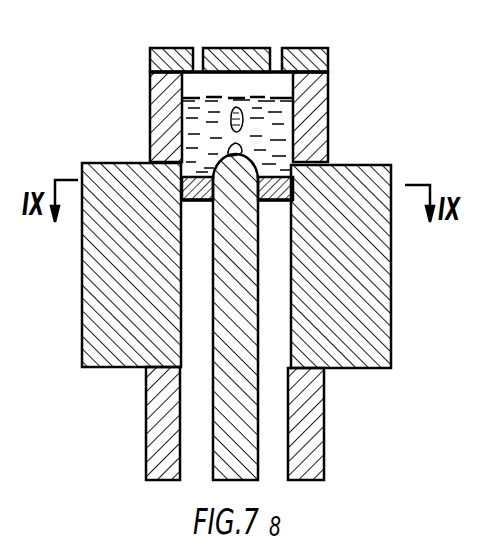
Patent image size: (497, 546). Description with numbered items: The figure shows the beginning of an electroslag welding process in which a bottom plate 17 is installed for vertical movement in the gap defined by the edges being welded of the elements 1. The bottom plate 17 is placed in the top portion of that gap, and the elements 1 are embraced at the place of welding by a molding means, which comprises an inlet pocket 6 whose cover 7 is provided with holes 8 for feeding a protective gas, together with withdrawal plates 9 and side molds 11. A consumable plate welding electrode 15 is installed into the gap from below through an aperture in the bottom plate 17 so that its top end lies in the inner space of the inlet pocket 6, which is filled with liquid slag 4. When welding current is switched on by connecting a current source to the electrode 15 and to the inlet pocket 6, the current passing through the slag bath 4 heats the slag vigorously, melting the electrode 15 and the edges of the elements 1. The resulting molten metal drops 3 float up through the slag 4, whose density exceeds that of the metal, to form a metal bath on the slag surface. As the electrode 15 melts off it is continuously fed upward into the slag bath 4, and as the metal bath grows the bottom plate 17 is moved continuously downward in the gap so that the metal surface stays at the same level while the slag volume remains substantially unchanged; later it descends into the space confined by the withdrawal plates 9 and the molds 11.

The elements being welded 1 is at (380, 274).
The molten metal drops 3 is at (229, 127).
The liquid slag 4 is at (186, 107).
The inlet pocket 6 is at (320, 92).
The cover 7 is at (328, 56).
The holes 8 is at (276, 56).
The withdrawal plates 9 is at (308, 412).
The side molds 11 is at (213, 80).
The welding electrode 15 is at (243, 347).
The bottom plate 17 is at (202, 196).